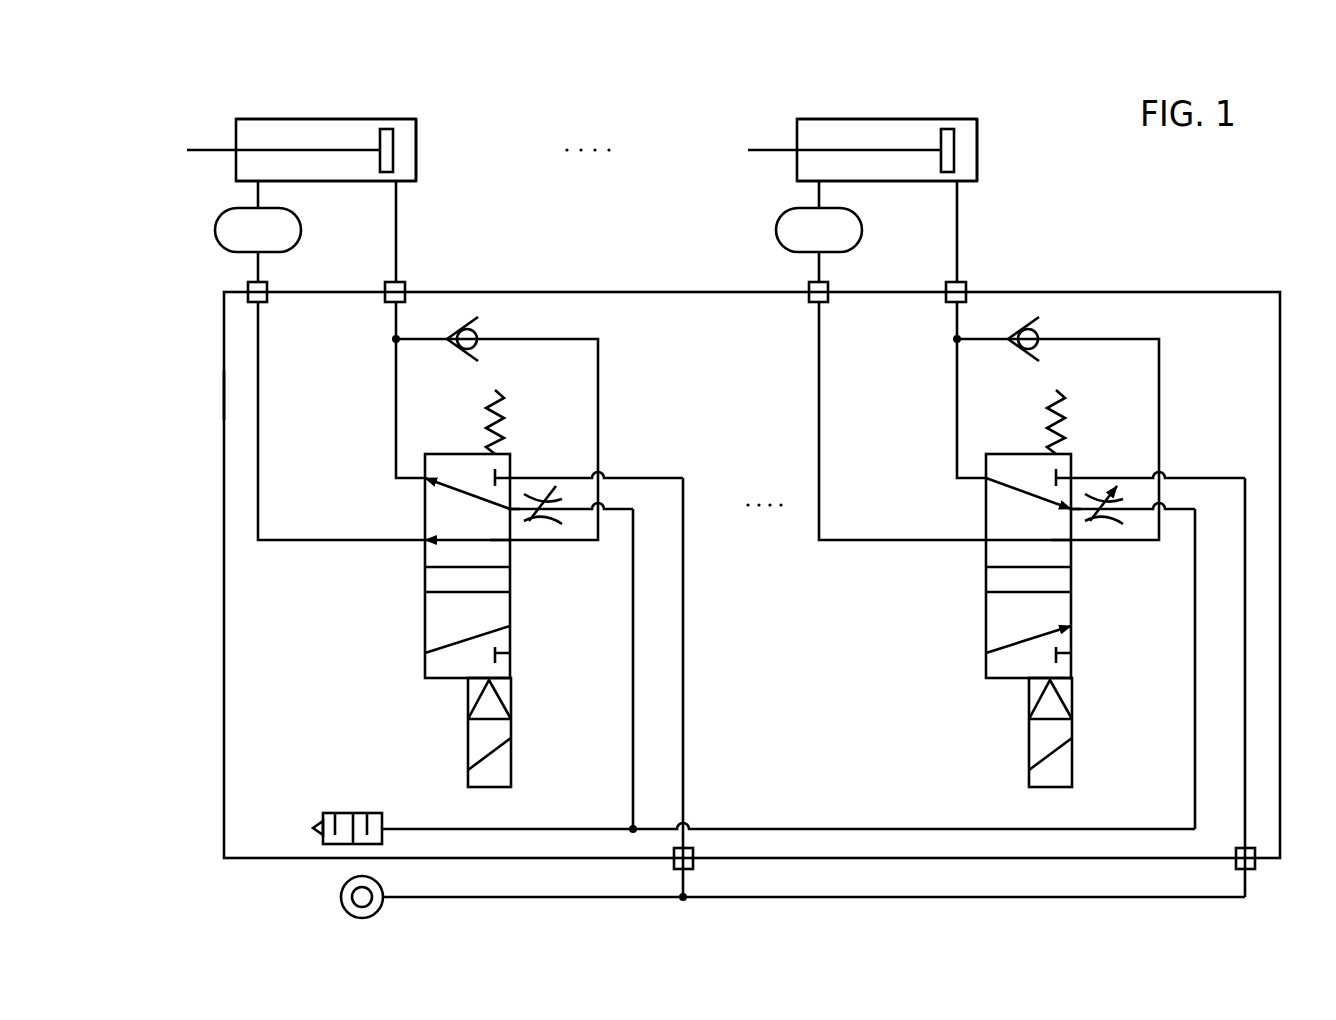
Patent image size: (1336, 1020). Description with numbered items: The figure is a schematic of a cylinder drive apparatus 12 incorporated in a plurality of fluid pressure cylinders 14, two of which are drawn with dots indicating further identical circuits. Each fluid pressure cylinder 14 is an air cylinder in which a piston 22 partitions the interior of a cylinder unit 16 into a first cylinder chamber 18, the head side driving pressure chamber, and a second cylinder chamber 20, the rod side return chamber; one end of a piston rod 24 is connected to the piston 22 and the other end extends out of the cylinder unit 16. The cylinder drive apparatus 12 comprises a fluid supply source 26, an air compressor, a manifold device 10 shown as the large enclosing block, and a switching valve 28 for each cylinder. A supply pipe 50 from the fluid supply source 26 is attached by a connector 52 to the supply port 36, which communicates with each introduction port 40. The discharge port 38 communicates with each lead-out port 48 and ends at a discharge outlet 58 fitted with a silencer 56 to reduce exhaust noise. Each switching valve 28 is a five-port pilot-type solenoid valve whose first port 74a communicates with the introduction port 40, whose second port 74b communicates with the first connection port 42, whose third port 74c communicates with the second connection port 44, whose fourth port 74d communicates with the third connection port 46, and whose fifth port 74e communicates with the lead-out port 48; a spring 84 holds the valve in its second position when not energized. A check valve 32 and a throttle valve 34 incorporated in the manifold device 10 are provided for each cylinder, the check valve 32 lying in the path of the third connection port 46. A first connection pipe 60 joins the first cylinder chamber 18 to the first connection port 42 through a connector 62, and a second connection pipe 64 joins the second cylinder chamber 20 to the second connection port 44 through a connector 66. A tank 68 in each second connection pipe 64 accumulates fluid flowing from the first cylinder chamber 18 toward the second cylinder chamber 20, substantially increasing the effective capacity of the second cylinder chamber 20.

The manifold device 10 is at (224, 345).
The cylinder drive apparatus 12 is at (215, 392).
The fluid pressure cylinder 14 is at (432, 120).
The cylinder unit 16 is at (418, 181).
The first cylinder chamber 18 is at (404, 152).
The second cylinder chamber 20 is at (306, 135).
The piston 22 is at (388, 130).
The piston rod 24 is at (217, 148).
The fluid supply source 26 is at (340, 896).
The switching valve 28 is at (512, 766).
The check valve 32 is at (480, 328).
The throttle valve 34 is at (563, 501).
The supply port 36 is at (683, 692).
The discharge port 38 is at (633, 668).
The introduction port 40 is at (623, 477).
The first connection port 42 is at (395, 401).
The second connection port 44 is at (297, 545).
The third connection port 46 is at (598, 370).
The lead-out port 48 is at (584, 511).
The supply pipe 50 is at (482, 897).
The connector 52 is at (692, 848).
The silencer 56 is at (350, 813).
The discharge outlet 58 is at (318, 829).
The first connection pipe 60 is at (397, 229).
The connector 62 is at (404, 283).
The second connection pipe 64 is at (259, 267).
The connector 66 is at (267, 303).
The tank 68 is at (215, 230).
The first port 74a is at (513, 477).
The second port 74b is at (425, 480).
The third port 74c is at (425, 545).
The fourth port 74d is at (513, 543).
The fifth port 74e is at (515, 512).
The spring 84 is at (488, 415).